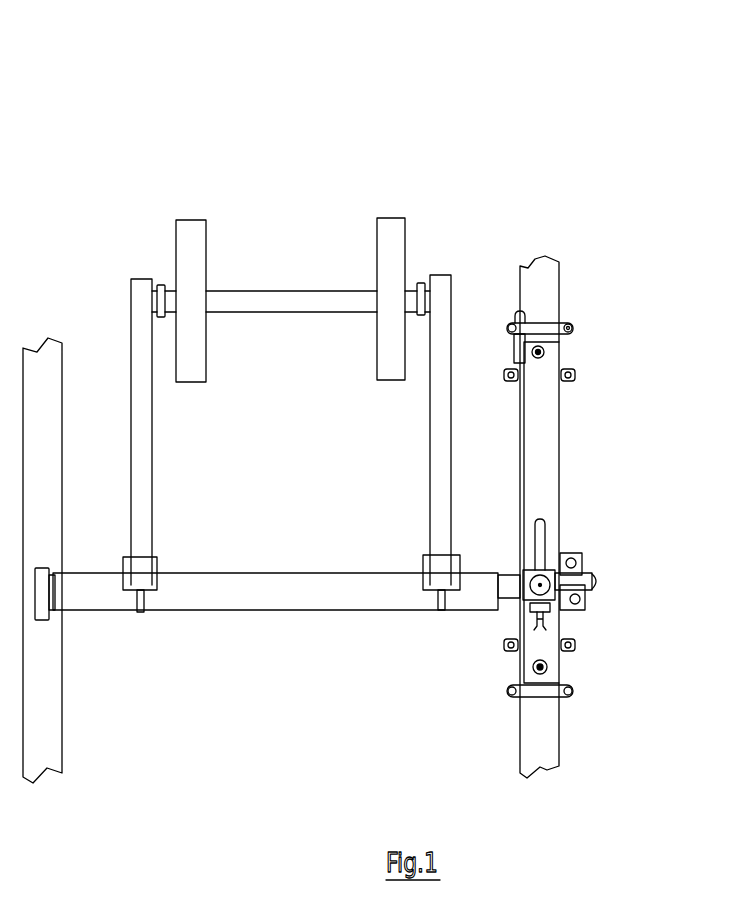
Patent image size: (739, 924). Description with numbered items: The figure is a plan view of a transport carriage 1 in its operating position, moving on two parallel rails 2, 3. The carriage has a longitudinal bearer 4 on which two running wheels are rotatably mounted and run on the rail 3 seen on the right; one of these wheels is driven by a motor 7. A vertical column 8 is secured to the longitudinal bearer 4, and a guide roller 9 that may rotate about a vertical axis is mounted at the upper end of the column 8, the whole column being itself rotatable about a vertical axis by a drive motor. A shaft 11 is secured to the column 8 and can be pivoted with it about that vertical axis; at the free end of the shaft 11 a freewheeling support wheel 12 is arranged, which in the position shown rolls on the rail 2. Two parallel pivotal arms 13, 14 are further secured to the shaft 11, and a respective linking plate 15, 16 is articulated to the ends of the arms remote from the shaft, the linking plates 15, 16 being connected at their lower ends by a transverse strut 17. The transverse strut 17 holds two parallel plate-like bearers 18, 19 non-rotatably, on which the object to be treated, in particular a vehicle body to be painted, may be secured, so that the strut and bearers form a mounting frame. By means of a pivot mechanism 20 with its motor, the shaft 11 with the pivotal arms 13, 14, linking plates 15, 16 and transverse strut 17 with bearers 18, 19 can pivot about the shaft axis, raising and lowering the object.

The transport carriage 1 is at (141, 148).
The rail 2 is at (55, 700).
The rail 3 is at (533, 717).
The longitudinal bearer 4 is at (540, 433).
The motor 7 is at (508, 340).
The vertical column 8 is at (527, 570).
The guide roller 9 is at (540, 577).
The shaft 11 is at (307, 583).
The support wheel 12 is at (43, 573).
The pivotal arm 13 is at (142, 455).
The pivotal arm 14 is at (433, 455).
The linking plate 15 is at (155, 303).
The linking plate 16 is at (425, 300).
The transverse strut 17 is at (289, 300).
The plate-like bearer 18 is at (197, 240).
The plate-like bearer 19 is at (380, 250).
The pivot mechanism 20 is at (549, 620).